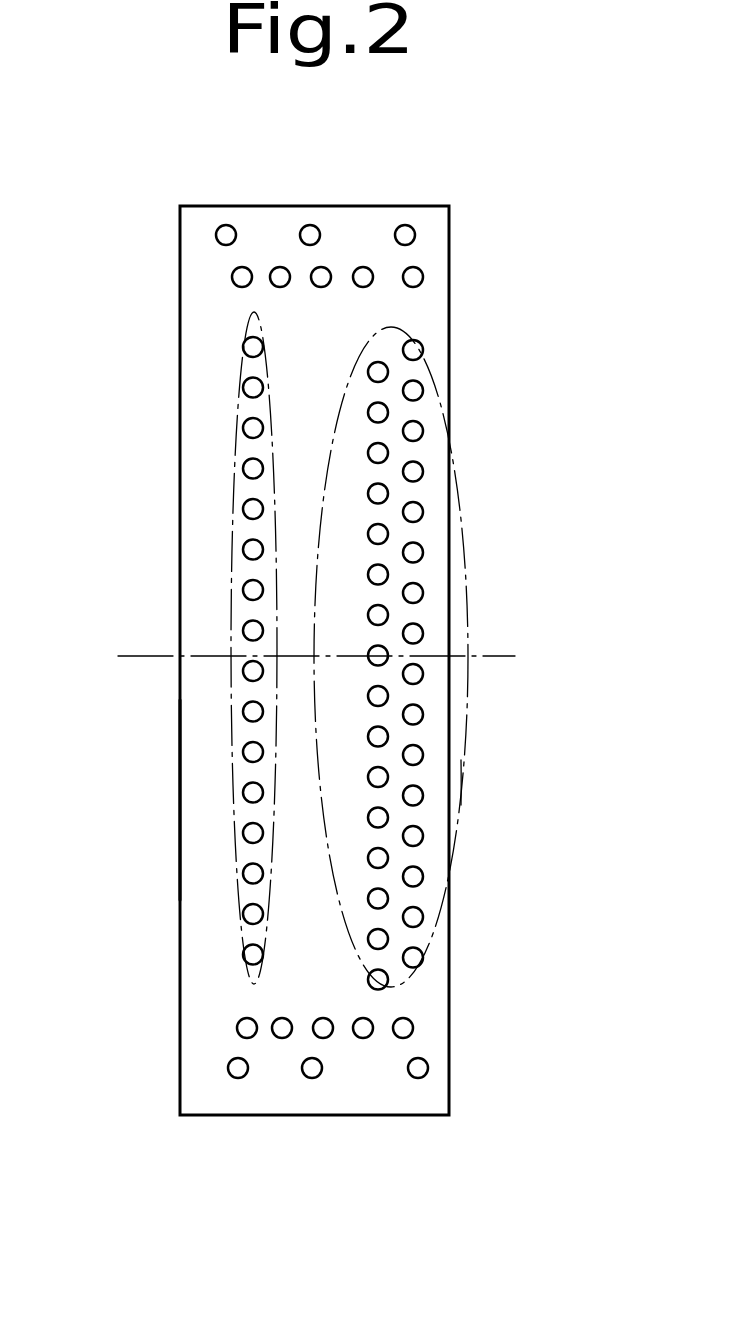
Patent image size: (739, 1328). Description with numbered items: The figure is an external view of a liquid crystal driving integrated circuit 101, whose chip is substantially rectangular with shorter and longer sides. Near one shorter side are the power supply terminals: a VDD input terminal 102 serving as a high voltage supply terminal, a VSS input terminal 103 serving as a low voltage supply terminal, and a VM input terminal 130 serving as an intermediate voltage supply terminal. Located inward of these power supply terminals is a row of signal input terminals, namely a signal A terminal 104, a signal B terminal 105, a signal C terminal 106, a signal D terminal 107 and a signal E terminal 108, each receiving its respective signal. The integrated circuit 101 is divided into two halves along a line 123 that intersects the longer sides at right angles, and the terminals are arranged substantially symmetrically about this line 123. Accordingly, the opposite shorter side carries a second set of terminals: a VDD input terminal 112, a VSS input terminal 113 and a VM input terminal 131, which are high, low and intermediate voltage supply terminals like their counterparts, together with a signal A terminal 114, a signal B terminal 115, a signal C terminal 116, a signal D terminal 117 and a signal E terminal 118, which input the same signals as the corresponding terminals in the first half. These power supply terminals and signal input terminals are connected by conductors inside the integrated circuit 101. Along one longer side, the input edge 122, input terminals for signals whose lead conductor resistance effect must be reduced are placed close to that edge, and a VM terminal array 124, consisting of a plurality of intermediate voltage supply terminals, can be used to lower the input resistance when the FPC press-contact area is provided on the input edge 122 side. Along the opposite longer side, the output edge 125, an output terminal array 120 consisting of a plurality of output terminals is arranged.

The liquid crystal driving integrated circuit 101 is at (180, 584).
The VDD input terminal 102 is at (305, 224).
The VSS input terminal 103 is at (404, 224).
The signal A terminal 104 is at (232, 277).
The signal B terminal 105 is at (272, 283).
The signal C terminal 106 is at (328, 268).
The signal D terminal 107 is at (373, 270).
The signal E terminal 108 is at (421, 283).
The VDD input terminal 112 is at (307, 1077).
The VSS input terminal 113 is at (415, 1077).
The signal A terminal 114 is at (238, 1031).
The signal B terminal 115 is at (275, 1021).
The signal C terminal 116 is at (329, 1019).
The signal D terminal 117 is at (366, 1018).
The signal E terminal 118 is at (413, 1033).
The output terminal array 120 is at (460, 482).
The input edge 122 is at (180, 785).
The line 123 is at (478, 652).
The VM terminal array 124 is at (233, 428).
The output edge 125 is at (460, 782).
The VM input terminal 130 is at (220, 226).
The VM input terminal 131 is at (233, 1077).